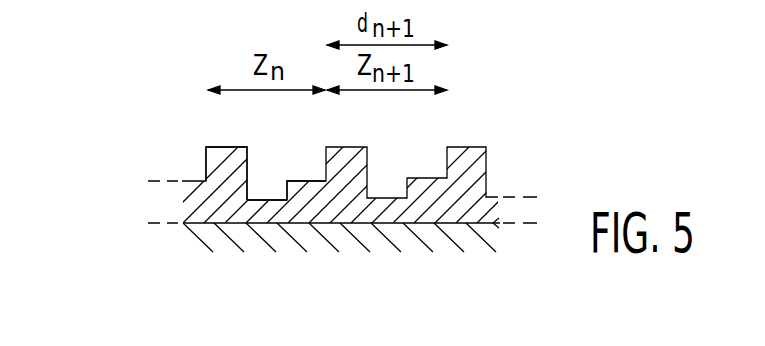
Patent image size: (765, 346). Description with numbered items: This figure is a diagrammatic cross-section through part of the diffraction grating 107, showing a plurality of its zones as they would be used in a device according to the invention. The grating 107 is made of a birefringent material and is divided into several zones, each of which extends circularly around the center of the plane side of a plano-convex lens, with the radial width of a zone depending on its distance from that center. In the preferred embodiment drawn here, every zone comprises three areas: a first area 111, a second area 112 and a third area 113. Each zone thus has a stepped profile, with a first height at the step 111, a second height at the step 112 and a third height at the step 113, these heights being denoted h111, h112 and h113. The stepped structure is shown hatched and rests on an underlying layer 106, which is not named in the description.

The substrate 106 is at (463, 240).
The diffraction grating 107 is at (512, 118).
The first area (step) 111 is at (223, 147).
The second area (step) 112 is at (265, 199).
The third area (step) 113 is at (313, 180).